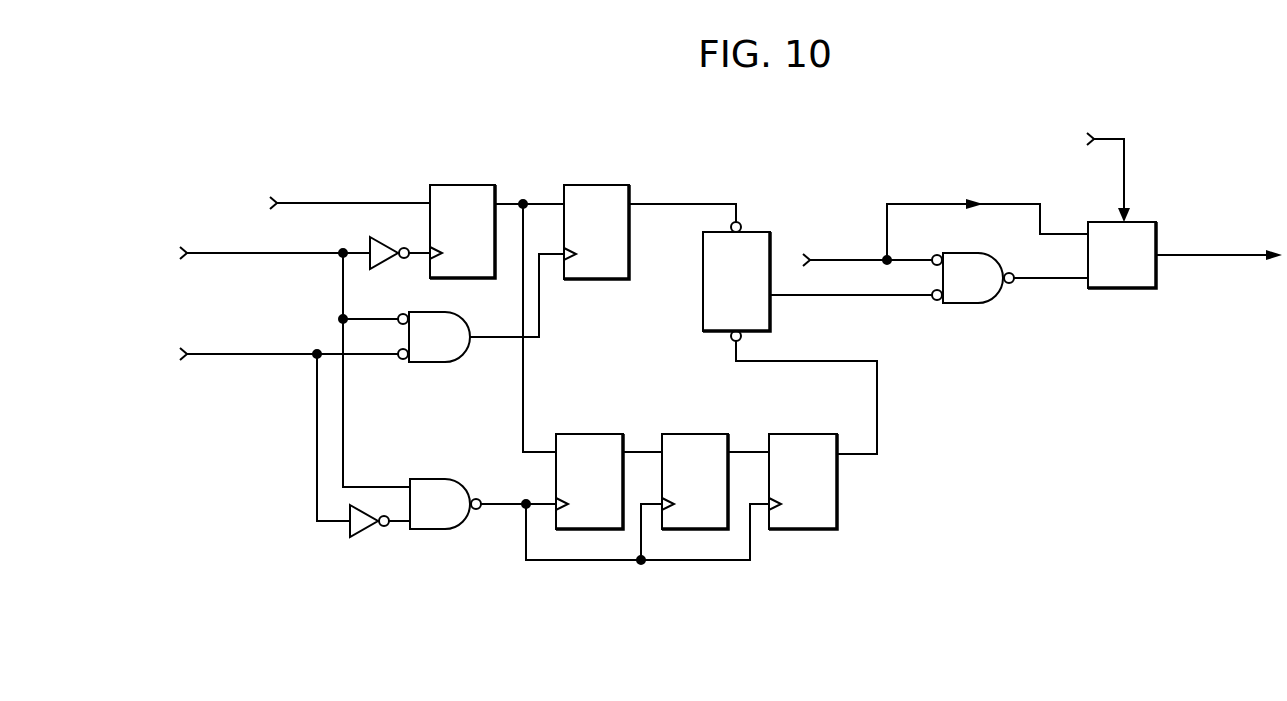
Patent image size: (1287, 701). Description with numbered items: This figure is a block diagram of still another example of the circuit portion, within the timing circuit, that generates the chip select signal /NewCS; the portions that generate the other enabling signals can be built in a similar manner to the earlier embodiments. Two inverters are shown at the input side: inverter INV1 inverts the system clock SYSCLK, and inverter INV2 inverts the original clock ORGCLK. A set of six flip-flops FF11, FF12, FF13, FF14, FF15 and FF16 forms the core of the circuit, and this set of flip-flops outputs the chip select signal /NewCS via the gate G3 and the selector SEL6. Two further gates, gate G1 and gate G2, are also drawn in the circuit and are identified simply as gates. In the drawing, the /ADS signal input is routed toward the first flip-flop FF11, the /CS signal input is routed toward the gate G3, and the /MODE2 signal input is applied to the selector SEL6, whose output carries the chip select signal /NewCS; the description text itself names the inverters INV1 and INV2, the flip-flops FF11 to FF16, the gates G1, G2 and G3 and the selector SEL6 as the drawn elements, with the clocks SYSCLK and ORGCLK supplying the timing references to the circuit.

The flip-flop FF11 is at (462, 184).
The flip-flop FF12 is at (594, 184).
The flip-flop FF13 is at (588, 433).
The flip-flop FF14 is at (692, 433).
The flip-flop FF15 is at (797, 433).
The flip-flop FF16 is at (702, 306).
The gate G1 is at (437, 365).
The gate G2 is at (437, 532).
The gate G3 is at (962, 304).
The inverter INV1 is at (365, 262).
The inverter INV2 is at (362, 535).
The selector SEL6 is at (1121, 291).
The /ADS address strobe signal ADS is at (350, 192).
The system clock SYSCLK is at (295, 356).
The original clock ORGCLK is at (289, 424).
The /CS chip select signal CS is at (945, 232).
The /MODE2 mode signal MODE2 is at (1051, 175).
The chip select signal NewCS is at (1219, 240).